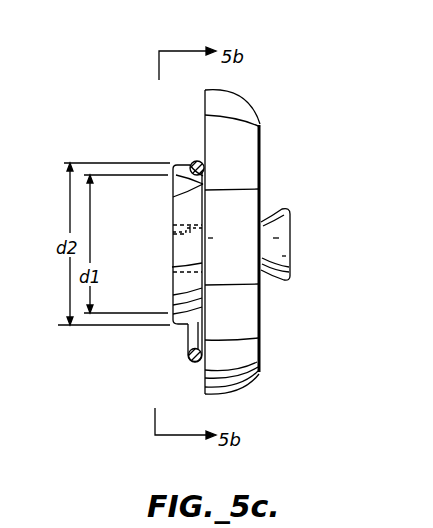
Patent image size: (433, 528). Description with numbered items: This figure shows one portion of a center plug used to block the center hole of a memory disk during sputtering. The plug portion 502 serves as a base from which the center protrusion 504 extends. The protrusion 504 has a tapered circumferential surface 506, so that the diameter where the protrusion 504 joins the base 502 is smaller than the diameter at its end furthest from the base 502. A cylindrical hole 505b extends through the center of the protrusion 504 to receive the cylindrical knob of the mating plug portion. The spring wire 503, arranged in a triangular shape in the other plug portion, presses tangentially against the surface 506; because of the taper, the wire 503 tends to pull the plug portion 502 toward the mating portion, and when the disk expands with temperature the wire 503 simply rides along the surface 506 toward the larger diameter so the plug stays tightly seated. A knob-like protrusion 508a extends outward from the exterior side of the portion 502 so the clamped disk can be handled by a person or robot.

The portion of plug 502 is at (250, 116).
The spring wire section 503 is at (188, 337).
The center protrusion 504 is at (173, 283).
The cylindrical hole 505b is at (173, 233).
The tapered circumferential surface 506 is at (192, 160).
The knob-like protrusion 508a is at (286, 211).